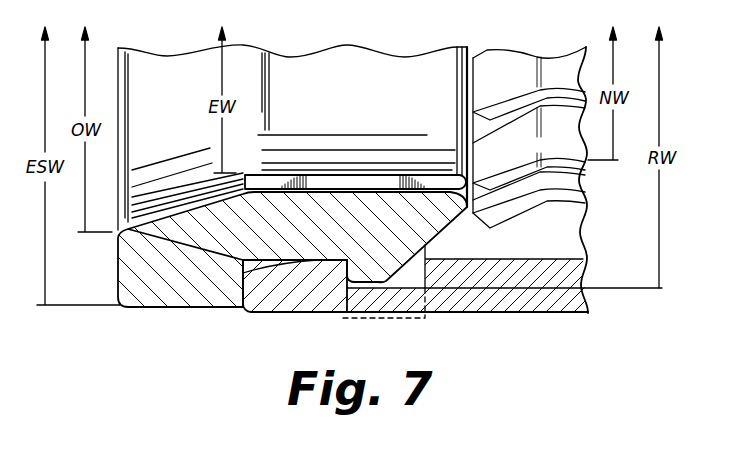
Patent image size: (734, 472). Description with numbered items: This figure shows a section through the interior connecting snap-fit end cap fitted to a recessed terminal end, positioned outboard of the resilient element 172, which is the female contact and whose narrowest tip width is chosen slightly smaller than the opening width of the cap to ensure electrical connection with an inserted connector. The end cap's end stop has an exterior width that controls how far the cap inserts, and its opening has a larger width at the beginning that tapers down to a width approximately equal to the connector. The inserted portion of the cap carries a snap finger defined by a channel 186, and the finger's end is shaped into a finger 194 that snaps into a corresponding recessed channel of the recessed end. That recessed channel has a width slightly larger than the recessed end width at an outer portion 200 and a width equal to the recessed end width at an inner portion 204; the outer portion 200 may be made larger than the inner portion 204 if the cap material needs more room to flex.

The resilient element 172 is at (563, 68).
The channel 186 is at (400, 289).
The finger 194 is at (365, 283).
The outer portion 200 is at (297, 314).
The inner portion 204 is at (527, 314).